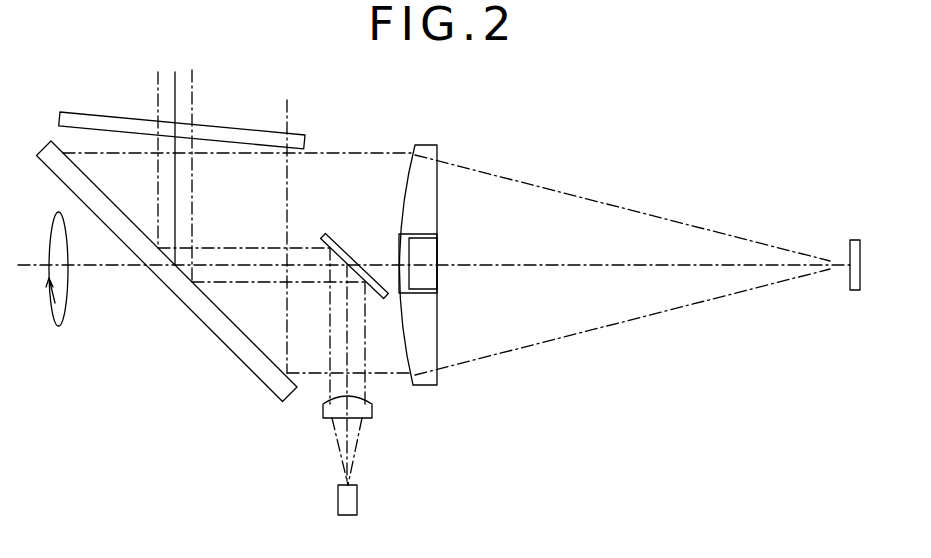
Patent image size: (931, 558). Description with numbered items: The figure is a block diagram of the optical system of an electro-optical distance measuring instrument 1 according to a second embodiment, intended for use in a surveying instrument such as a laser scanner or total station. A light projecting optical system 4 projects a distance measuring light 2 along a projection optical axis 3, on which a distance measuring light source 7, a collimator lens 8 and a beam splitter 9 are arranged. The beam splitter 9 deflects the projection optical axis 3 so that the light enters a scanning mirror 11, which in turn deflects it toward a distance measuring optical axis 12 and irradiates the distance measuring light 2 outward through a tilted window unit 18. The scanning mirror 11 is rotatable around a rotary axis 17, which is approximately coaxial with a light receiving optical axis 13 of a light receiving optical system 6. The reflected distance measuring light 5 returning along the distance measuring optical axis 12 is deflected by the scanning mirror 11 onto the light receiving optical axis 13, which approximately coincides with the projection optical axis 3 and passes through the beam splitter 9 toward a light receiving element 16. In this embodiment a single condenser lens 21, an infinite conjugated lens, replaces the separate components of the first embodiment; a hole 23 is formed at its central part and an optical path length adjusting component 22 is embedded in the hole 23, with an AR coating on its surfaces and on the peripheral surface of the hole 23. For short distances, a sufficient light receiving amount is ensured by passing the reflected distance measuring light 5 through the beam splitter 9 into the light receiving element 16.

The electro-optical distance measuring instrument 1 is at (547, 88).
The distance measuring light 2 is at (192, 112).
The projection optical axis 3 is at (348, 325).
The light projecting optical system 4 is at (338, 455).
The reflected distance measuring light 5 is at (588, 198).
The light receiving optical system 6 is at (473, 382).
The distance measuring light source 7 is at (357, 500).
The collimator lens 8 is at (322, 410).
The beam splitter 9 is at (342, 238).
The scanning mirror 11 is at (182, 303).
The distance measuring optical axis 12 is at (173, 110).
The light receiving optical axis 13 is at (547, 262).
The light receiving element 16 is at (852, 240).
The rotary axis 17 is at (25, 265).
The window unit 18 is at (233, 127).
The condenser lens 21 is at (432, 145).
The optical path length adjusting component 22 is at (425, 252).
The hole 23 is at (398, 245).